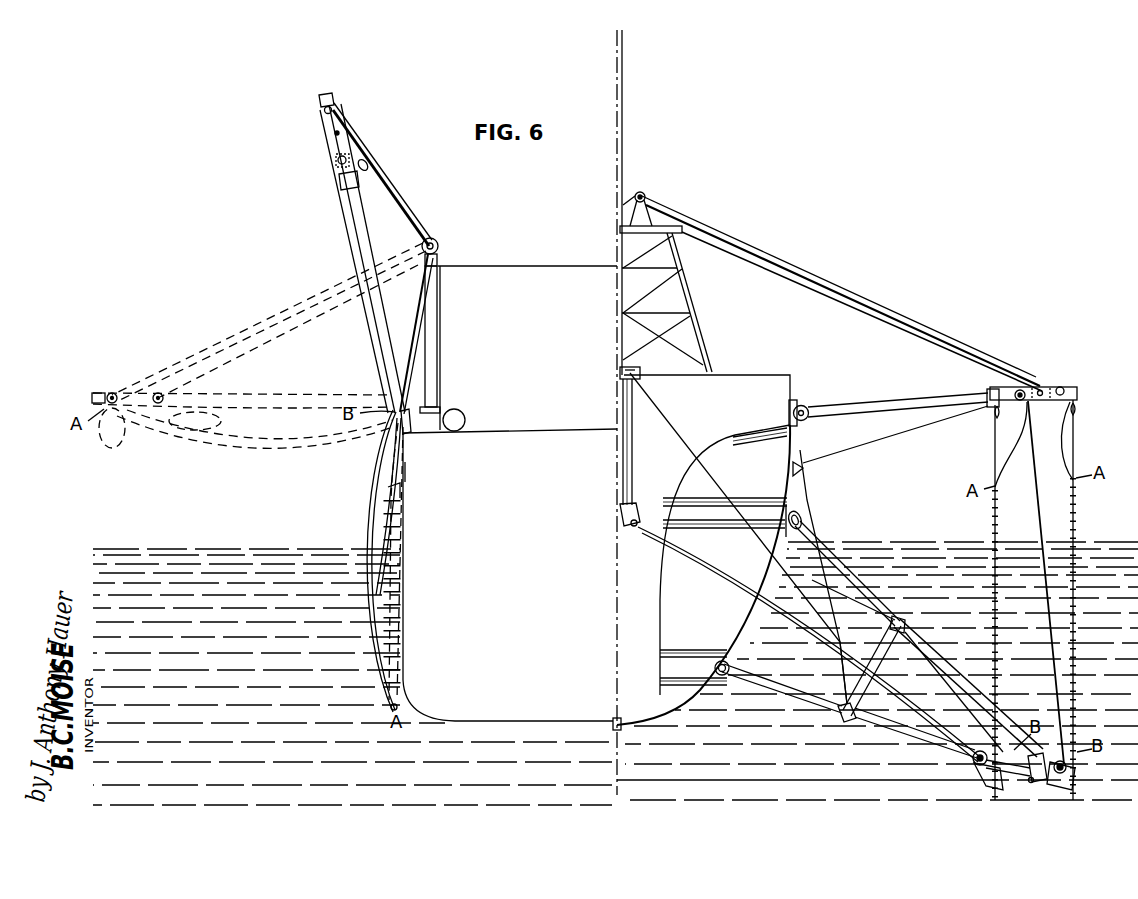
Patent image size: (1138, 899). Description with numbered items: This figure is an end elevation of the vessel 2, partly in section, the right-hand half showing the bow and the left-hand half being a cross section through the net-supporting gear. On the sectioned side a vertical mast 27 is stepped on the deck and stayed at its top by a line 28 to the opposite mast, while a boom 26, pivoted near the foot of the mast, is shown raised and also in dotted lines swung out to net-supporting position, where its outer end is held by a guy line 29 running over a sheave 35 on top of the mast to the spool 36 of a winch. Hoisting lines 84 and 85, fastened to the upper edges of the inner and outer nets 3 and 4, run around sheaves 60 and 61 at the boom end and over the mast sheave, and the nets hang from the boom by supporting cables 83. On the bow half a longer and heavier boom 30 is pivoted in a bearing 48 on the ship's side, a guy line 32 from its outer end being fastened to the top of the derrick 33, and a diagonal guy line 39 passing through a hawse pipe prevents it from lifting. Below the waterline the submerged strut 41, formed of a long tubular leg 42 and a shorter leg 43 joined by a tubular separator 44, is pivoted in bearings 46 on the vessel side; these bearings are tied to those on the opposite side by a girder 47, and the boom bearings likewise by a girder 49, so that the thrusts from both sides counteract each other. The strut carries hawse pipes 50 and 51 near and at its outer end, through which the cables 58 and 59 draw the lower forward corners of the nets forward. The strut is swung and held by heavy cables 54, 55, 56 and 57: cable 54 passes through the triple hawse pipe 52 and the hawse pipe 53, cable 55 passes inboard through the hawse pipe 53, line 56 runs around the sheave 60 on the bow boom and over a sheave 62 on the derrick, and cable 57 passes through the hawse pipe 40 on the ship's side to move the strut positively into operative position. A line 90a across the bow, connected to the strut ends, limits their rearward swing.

The vessel 2 is at (596, 412).
The inner torpedo net 3 is at (292, 441).
The outer torpedo net 4 is at (253, 442).
The boom 26 is at (371, 239).
The vertical mast 27 is at (437, 338).
The line 28 is at (534, 265).
The guy line 29 is at (370, 524).
The bow boom 30 is at (887, 403).
The guy line 32 is at (748, 259).
The derrick 33 is at (680, 302).
The sheave 35 is at (438, 245).
The winch spool 36 is at (466, 418).
The diagonal guy line 39 is at (403, 471).
The hawse pipe 40 is at (806, 476).
The submerged strut 41 is at (751, 569).
The long tubular leg 42 is at (840, 720).
The short leg 43 is at (906, 632).
The tubular separator 44 is at (880, 652).
The bearing 46 is at (803, 508).
The girder 47 is at (725, 522).
The bearing 48 is at (799, 404).
The girder 49 is at (764, 439).
The hawse pipe 50 is at (993, 773).
The hawse pipe 51 is at (1080, 772).
The triple hawse pipe 52 is at (621, 512).
The hawse pipe 53 is at (646, 372).
The cable 54 is at (960, 723).
The cable 55 is at (765, 580).
The line 56 is at (1041, 517).
The cable 57 is at (820, 533).
The cable 58 is at (900, 703).
The cable 59 is at (947, 703).
The sheave 60 is at (160, 391).
The sheave 61 is at (110, 391).
The sheave 62 is at (645, 195).
The supporting cable 83 is at (165, 428).
The hoisting line 84 is at (339, 179).
The hoisting line 85 is at (328, 163).
The line 90a is at (664, 776).